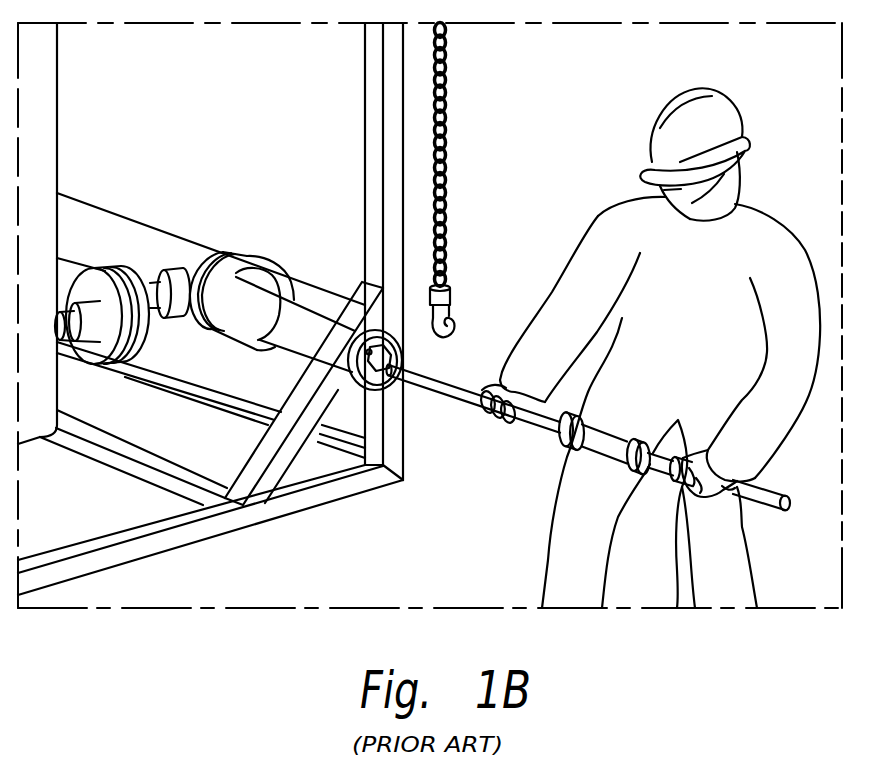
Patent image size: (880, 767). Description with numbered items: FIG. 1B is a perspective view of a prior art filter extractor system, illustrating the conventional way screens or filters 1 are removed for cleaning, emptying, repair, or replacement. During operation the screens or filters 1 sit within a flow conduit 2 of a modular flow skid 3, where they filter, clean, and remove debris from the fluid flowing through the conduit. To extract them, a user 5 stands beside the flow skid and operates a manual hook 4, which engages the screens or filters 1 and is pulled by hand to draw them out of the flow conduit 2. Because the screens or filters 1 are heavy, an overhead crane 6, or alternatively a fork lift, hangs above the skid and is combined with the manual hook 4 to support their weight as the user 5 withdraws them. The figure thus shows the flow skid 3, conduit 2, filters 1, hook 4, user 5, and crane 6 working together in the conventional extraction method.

The screens or filters 1 is at (310, 300).
The flow conduit 2 is at (150, 226).
The modular flow skid 3 is at (225, 554).
The manual hook 4 is at (450, 398).
The user 5 is at (585, 237).
The overhead crane 6 is at (447, 171).